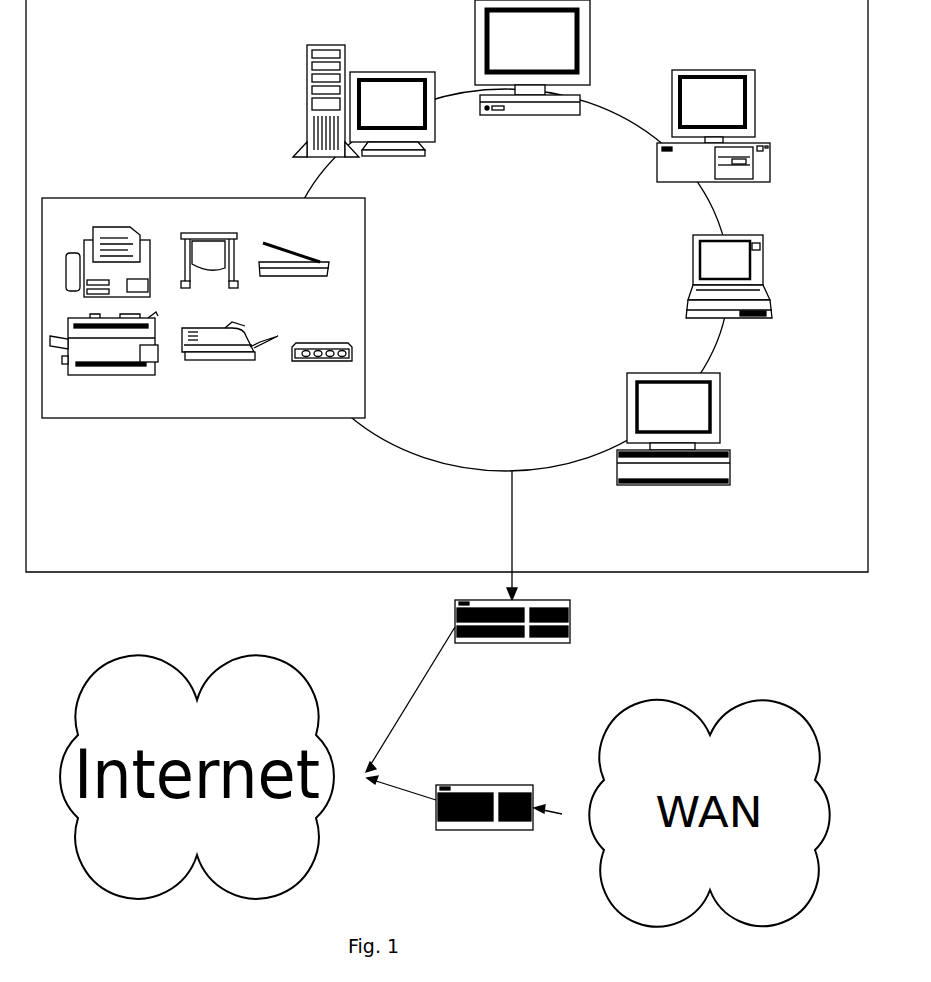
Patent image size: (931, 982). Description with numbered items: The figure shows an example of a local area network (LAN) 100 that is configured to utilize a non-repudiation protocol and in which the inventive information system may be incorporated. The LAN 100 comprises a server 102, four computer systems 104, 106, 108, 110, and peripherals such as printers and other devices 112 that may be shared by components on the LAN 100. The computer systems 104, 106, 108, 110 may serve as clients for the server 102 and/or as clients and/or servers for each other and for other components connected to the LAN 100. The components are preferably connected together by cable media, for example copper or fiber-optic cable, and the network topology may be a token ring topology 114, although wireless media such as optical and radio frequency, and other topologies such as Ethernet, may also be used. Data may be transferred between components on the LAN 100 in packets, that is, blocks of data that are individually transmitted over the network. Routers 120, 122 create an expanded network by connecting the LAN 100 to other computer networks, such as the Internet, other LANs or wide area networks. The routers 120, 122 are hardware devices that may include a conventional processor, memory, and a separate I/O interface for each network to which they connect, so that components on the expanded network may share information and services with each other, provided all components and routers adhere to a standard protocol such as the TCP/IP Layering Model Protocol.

The local area network (LAN) 100 is at (447, 286).
The server 102 is at (364, 110).
The computer system 104 is at (532, 67).
The computer system 106 is at (714, 136).
The computer system 108 is at (727, 287).
The computer system 110 is at (673, 438).
The peripherals 112 is at (203, 308).
The token ring topology 114 is at (506, 280).
The router 120 is at (512, 631).
The router 122 is at (484, 816).